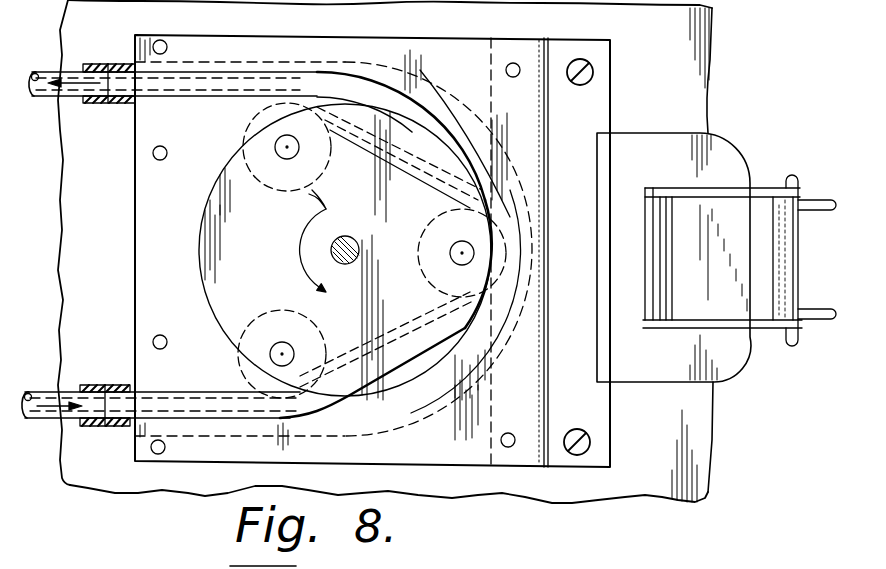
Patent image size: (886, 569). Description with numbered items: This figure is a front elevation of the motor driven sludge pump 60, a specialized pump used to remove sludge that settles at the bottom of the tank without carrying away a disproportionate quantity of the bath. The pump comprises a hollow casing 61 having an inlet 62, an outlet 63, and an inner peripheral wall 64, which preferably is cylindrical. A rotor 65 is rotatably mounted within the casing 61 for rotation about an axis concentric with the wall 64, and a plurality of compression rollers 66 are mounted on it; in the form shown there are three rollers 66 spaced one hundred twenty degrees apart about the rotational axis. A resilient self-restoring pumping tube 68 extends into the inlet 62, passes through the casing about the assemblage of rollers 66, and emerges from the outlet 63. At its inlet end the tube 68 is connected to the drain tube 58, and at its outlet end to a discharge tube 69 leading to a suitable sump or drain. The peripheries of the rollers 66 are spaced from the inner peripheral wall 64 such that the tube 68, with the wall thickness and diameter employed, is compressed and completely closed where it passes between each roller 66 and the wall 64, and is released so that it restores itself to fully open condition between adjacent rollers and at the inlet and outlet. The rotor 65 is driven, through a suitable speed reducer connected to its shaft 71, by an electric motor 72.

The drain tube 58 is at (65, 390).
The motor driven pump 60 is at (460, 472).
The hollow casing 61 is at (432, 112).
The inlet 62 is at (105, 427).
The outlet 63 is at (117, 105).
The inner peripheral wall 64 is at (374, 86).
The rotor 65 is at (403, 193).
The compression rollers 66 is at (247, 130).
The resilient self-restoring pumping tube 68 is at (188, 99).
The discharge tube 69 is at (50, 97).
The shaft 71 is at (353, 221).
The electric motor 72 is at (733, 379).